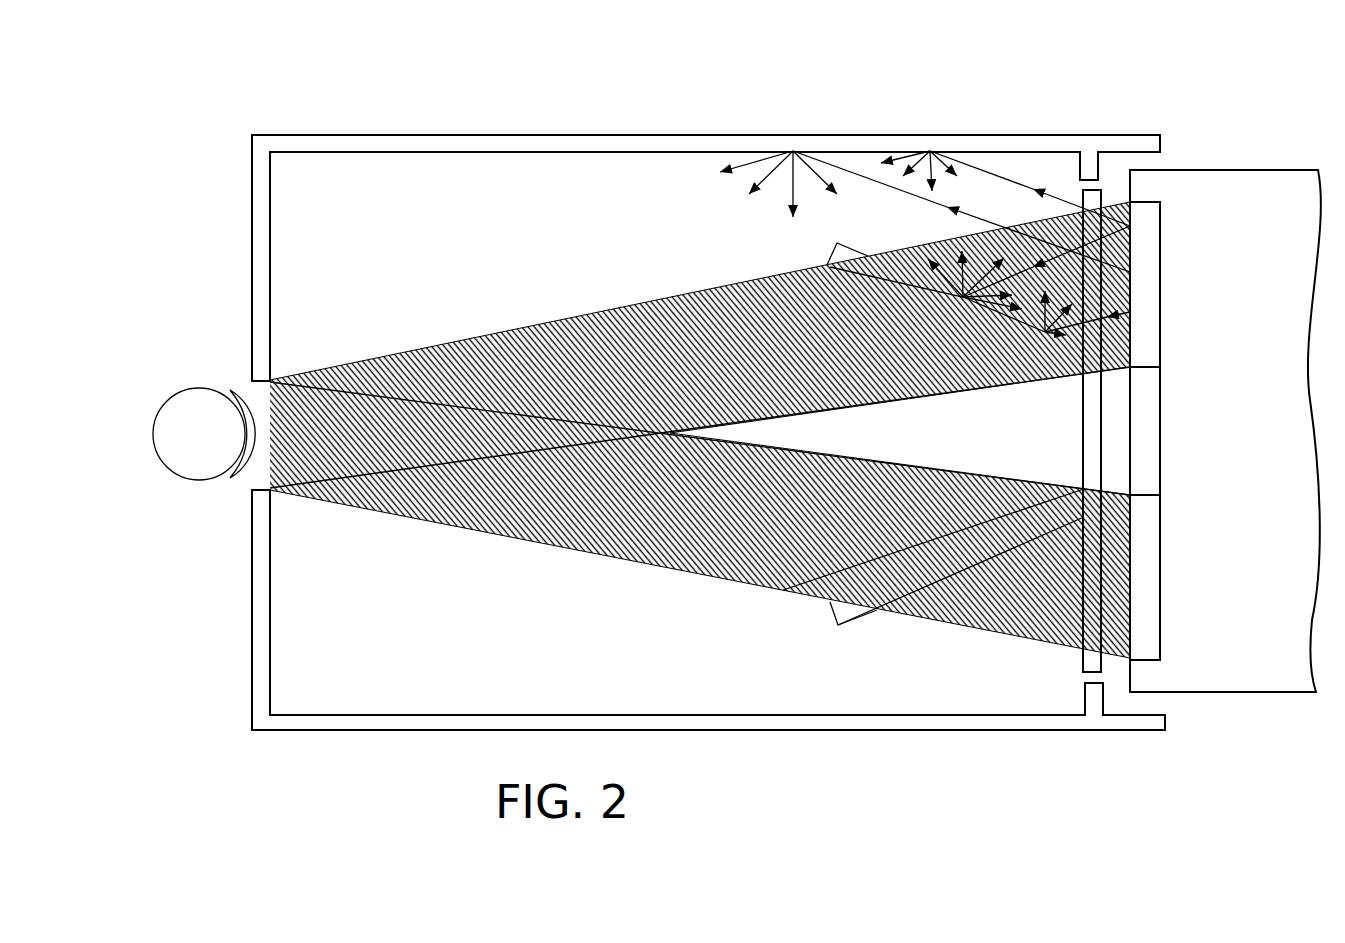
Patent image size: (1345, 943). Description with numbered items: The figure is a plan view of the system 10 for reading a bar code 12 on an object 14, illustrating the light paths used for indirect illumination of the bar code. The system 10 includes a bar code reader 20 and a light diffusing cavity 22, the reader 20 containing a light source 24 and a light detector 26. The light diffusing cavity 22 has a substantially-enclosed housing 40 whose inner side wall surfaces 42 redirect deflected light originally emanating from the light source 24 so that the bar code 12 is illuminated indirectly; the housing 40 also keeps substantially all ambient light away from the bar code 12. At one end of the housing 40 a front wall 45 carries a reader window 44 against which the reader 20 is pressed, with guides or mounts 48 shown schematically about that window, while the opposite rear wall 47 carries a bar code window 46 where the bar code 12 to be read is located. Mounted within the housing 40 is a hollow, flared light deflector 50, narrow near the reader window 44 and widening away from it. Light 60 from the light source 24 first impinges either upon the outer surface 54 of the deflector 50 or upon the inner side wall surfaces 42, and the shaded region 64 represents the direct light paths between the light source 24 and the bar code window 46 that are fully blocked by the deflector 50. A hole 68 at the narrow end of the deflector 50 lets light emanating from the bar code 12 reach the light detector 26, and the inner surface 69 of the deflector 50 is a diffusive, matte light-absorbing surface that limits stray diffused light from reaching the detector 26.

The system 10 is at (206, 77).
The bar code 12 is at (229, 388).
The object 14 is at (183, 501).
The bar code reader 20 is at (1283, 159).
The light diffusing cavity 22 is at (774, 94).
The light source 24 is at (1152, 273).
The light detector 26 is at (1152, 433).
The housing 40 is at (324, 134).
The inner side wall surfaces 42 is at (396, 153).
The reader window 44 is at (1116, 685).
The front wall 45 is at (1089, 697).
The bar code window 46 is at (246, 481).
The rear wall 47 is at (286, 623).
The guides or mounts 48 is at (1130, 137).
The light deflector 50 is at (884, 629).
The outer surface 54 is at (966, 556).
The light 60 is at (990, 172).
The shaded region 64 is at (598, 348).
The hole 68 is at (1061, 425).
The inner surface 69 is at (783, 591).